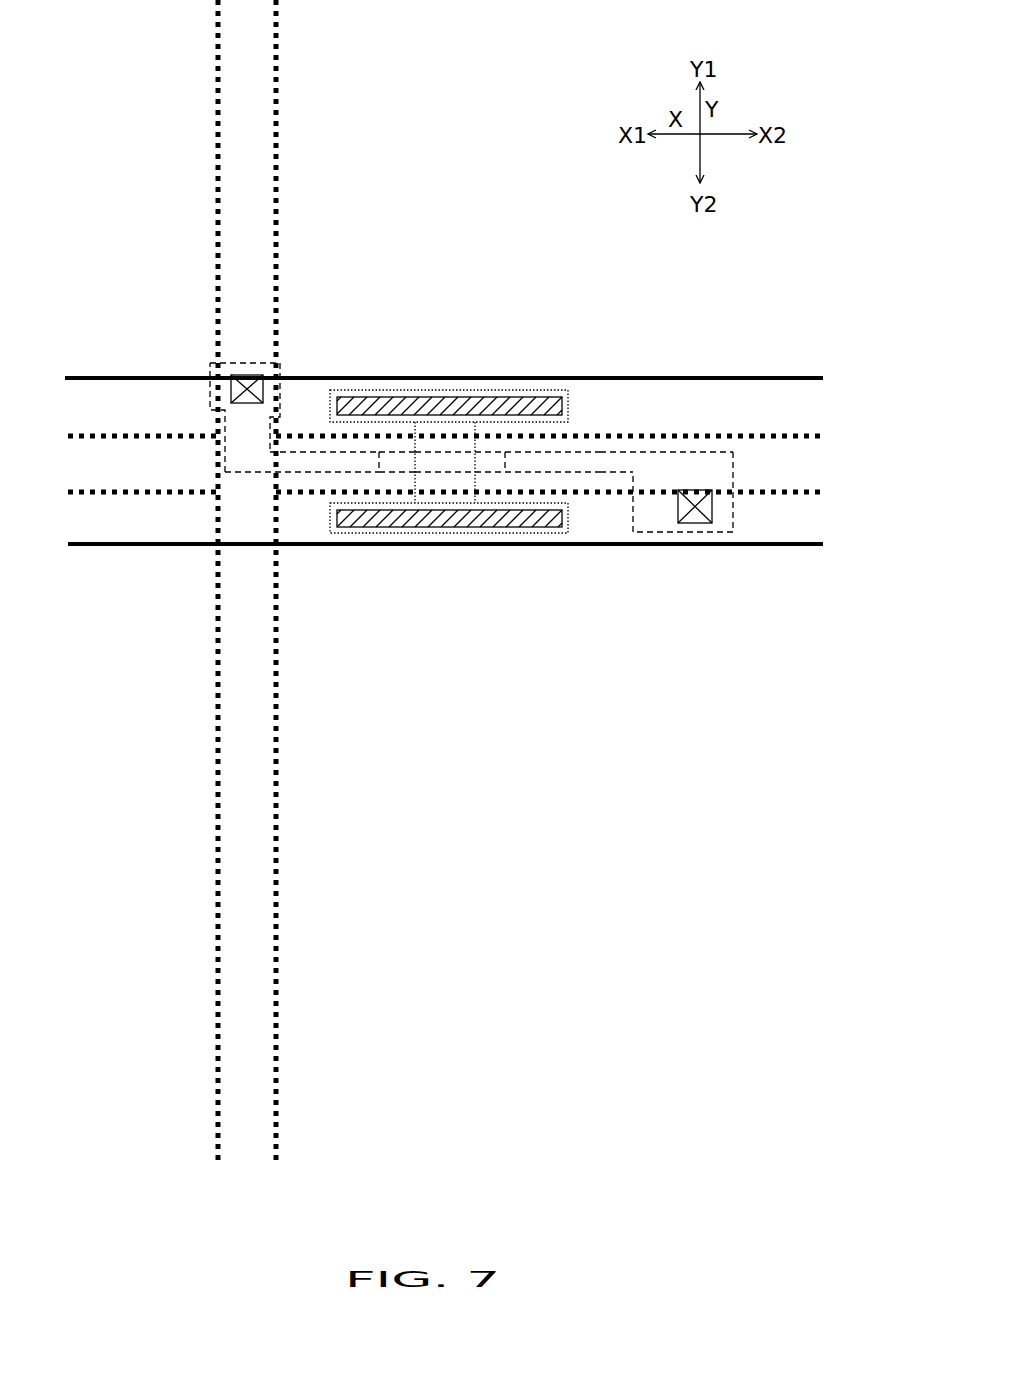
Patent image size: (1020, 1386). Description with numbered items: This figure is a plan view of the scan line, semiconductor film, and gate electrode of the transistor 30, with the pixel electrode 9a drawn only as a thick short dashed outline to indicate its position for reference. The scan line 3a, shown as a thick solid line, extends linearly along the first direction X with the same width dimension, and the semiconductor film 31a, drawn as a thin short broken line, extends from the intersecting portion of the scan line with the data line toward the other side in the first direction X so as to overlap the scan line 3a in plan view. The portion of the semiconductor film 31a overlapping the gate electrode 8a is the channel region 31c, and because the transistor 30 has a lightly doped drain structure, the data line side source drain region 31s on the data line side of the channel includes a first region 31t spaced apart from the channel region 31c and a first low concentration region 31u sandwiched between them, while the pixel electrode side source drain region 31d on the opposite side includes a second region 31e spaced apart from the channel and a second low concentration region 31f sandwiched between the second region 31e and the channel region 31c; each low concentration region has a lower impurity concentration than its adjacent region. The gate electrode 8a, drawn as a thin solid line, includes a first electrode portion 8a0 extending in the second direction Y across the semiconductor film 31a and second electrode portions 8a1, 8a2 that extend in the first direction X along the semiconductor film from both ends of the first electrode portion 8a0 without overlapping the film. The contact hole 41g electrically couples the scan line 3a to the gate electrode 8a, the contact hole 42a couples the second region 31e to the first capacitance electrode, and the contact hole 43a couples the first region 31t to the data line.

The scan line 3a is at (62, 380).
The pixel electrode 9a is at (218, 3).
The transistor 30 is at (268, 483).
The semiconductor film 31a is at (471, 487).
The channel region 31c is at (437, 456).
The data line side source drain region 31s is at (328, 542).
The first region 31t is at (345, 460).
The first low concentration region 31u is at (398, 460).
The pixel electrode side source drain region 31d is at (537, 542).
The second low concentration region 31f is at (495, 462).
The second region 31e is at (578, 460).
The gate electrode 8a is at (490, 441).
The first electrode portion 8a0 is at (479, 442).
The second electrode portion 8a1 is at (493, 532).
The second electrode portion 8a2 is at (503, 391).
The contact hole 41g is at (535, 510).
The contact hole 42a is at (701, 523).
The contact hole 43a is at (266, 377).